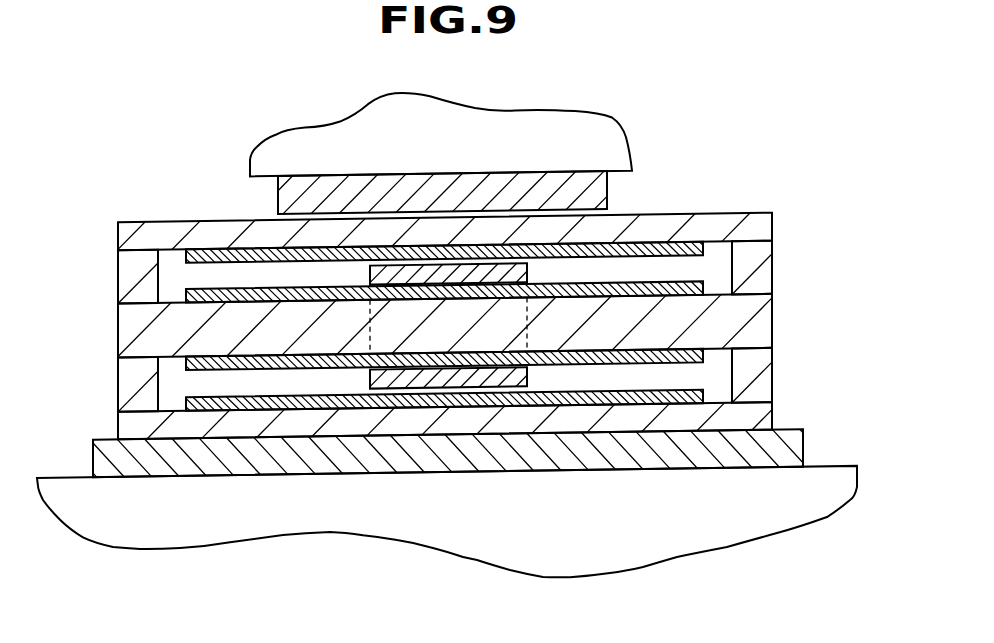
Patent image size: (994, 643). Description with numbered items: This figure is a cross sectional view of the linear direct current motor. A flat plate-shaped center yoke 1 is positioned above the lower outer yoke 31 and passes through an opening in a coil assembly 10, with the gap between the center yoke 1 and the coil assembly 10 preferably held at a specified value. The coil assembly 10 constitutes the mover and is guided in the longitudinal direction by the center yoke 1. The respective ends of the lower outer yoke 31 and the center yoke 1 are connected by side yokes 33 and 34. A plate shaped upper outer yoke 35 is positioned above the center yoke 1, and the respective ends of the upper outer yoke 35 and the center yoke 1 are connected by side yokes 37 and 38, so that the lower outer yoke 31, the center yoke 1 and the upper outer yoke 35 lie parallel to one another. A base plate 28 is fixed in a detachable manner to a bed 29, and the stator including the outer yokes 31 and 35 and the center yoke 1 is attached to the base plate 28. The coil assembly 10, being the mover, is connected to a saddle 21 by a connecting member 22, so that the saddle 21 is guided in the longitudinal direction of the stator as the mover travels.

The center yoke 1 is at (775, 323).
The coil assembly 10 is at (475, 387).
The saddle 21 is at (603, 124).
The connecting member 22 is at (603, 194).
The base plate 28 is at (797, 447).
The bed 29 is at (665, 555).
The lower outer yoke 31 is at (770, 421).
The side yoke 33 is at (131, 380).
The side yoke 34 is at (766, 376).
The upper outer yoke 35 is at (760, 240).
The side yoke 37 is at (131, 272).
The side yoke 38 is at (766, 277).